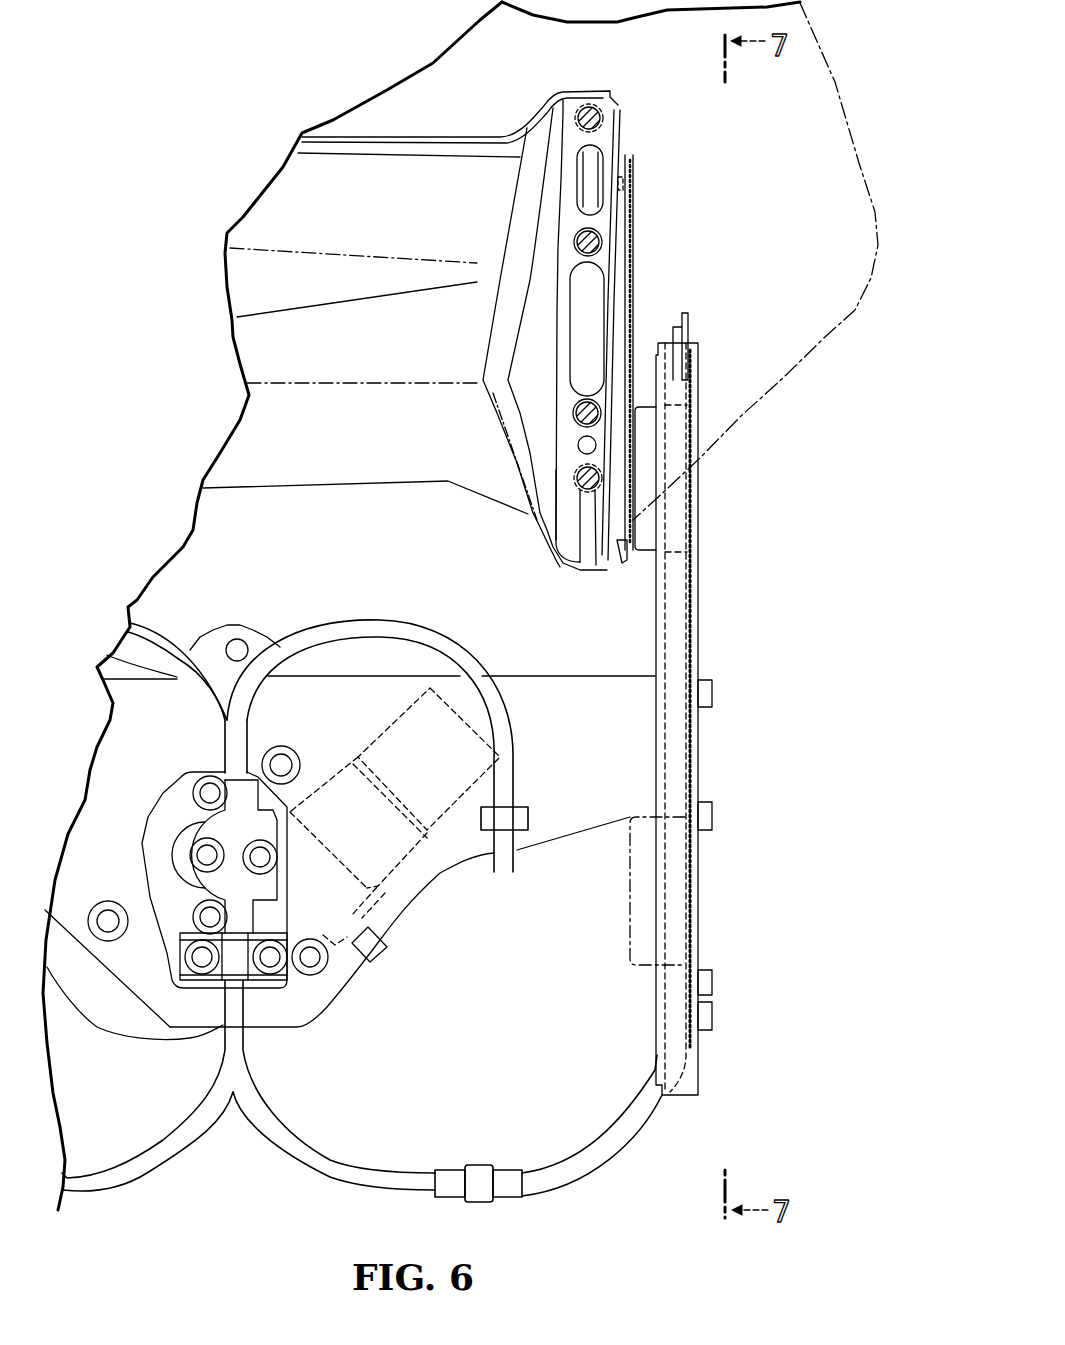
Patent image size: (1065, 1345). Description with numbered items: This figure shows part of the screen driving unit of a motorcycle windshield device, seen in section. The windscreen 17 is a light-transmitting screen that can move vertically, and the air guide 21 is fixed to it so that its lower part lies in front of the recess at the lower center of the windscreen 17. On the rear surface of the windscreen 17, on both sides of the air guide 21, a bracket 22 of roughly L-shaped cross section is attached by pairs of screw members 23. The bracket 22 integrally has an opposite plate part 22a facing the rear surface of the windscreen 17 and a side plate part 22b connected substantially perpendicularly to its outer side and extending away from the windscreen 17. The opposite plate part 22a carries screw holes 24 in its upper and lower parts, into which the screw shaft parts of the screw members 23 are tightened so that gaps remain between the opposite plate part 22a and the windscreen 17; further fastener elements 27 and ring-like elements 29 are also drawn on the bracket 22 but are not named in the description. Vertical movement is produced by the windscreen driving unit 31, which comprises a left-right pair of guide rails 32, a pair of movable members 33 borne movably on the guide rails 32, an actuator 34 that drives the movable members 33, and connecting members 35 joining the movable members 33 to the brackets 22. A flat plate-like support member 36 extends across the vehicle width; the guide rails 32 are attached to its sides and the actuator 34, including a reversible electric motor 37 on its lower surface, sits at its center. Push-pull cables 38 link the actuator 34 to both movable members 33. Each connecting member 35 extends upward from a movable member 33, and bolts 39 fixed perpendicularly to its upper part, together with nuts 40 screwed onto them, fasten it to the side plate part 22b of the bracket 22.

The windscreen 17 is at (788, 378).
The air guide 21 is at (363, 177).
The bracket 22 is at (552, 327).
The opposite plate part 22a is at (577, 247).
The side plate part 22b is at (622, 573).
The screw member 23 is at (590, 110).
The screw hole 24 is at (612, 122).
The bolt 27 is at (600, 242).
The nut 29 is at (600, 243).
The windscreen driving unit 31 is at (348, 988).
The guide rail 32 is at (698, 627).
The movable member 33 is at (647, 435).
The actuator 34 is at (150, 800).
The connecting member 35 is at (633, 283).
The support member 36 is at (335, 703).
The electric motor 37 is at (413, 903).
The push-pull cable 38 is at (143, 633).
The bolt 39 is at (607, 183).
The nut 40 is at (608, 183).